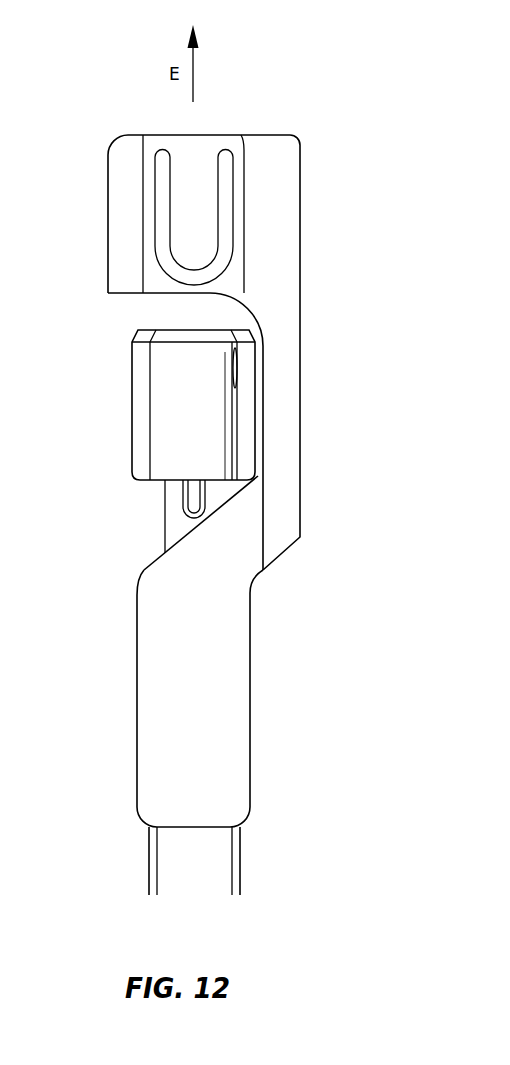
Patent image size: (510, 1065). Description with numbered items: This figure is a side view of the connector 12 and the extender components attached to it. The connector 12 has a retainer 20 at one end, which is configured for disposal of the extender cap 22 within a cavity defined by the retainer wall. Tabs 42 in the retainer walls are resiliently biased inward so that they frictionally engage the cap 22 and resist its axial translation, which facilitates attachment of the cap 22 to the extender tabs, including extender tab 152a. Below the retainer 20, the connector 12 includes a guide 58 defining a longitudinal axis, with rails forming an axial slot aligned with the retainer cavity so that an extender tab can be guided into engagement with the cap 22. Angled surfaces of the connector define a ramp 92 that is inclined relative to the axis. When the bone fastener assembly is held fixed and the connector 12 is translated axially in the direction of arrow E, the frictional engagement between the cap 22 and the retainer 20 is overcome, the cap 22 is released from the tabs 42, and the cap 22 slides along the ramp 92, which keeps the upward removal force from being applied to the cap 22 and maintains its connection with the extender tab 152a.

The connector 12 is at (346, 130).
The retainer 20 is at (108, 198).
The tabs 42 is at (193, 220).
The extender cap 22 is at (167, 387).
The ramp 92 is at (202, 535).
The guide 58 is at (306, 723).
The extender tab 152a is at (198, 870).